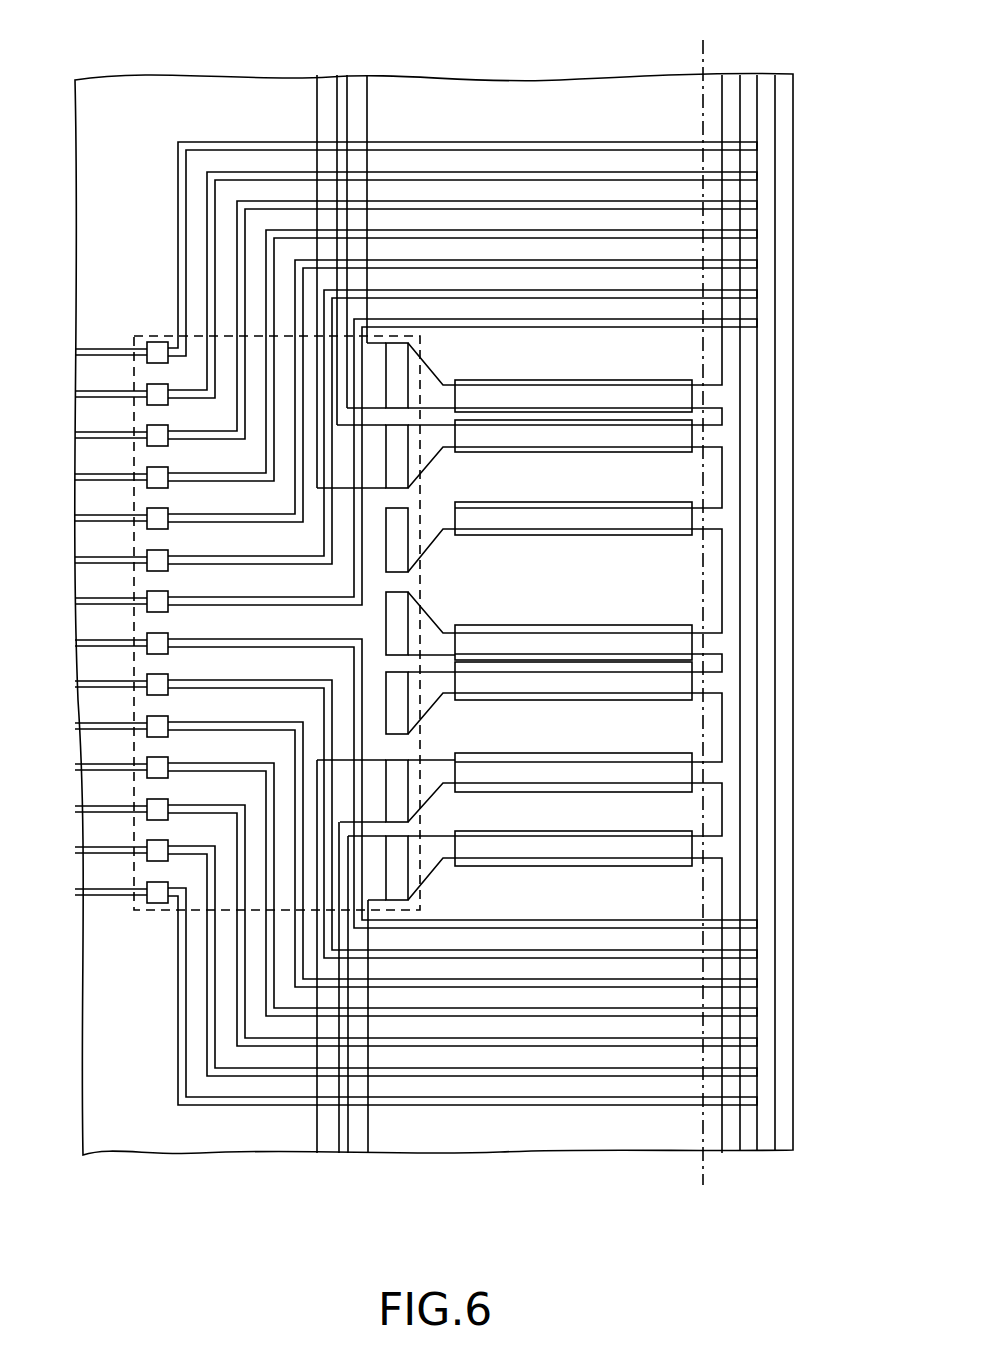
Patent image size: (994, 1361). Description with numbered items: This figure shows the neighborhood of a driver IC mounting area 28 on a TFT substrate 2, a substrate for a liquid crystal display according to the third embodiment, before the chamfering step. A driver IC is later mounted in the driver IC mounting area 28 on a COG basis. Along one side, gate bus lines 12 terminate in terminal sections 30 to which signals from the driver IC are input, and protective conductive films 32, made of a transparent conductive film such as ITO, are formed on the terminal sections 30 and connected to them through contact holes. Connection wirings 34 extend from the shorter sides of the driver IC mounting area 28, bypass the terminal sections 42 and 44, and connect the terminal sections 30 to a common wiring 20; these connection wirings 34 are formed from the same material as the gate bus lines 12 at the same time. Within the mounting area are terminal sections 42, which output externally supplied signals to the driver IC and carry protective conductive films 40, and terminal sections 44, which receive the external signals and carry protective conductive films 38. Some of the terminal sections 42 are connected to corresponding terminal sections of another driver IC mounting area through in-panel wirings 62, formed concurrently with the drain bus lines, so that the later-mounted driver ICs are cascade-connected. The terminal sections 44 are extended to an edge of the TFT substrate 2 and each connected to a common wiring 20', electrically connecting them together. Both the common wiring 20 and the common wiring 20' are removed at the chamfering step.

The TFT substrate 2 is at (787, 105).
The gate bus lines 12 is at (92, 349).
The common wiring 20 is at (768, 575).
The common wiring 20' is at (722, 580).
The driver IC mounting area 28 is at (247, 623).
The terminal sections 30 is at (150, 342).
The protective conductive films 32 is at (160, 342).
The connection wirings 34 is at (240, 142).
The protective conductive films 38 is at (578, 380).
The protective conductive films 40 is at (405, 345).
The terminal sections 42 is at (426, 352).
The terminal sections 44 is at (626, 380).
The in-panel wirings 62 is at (358, 80).